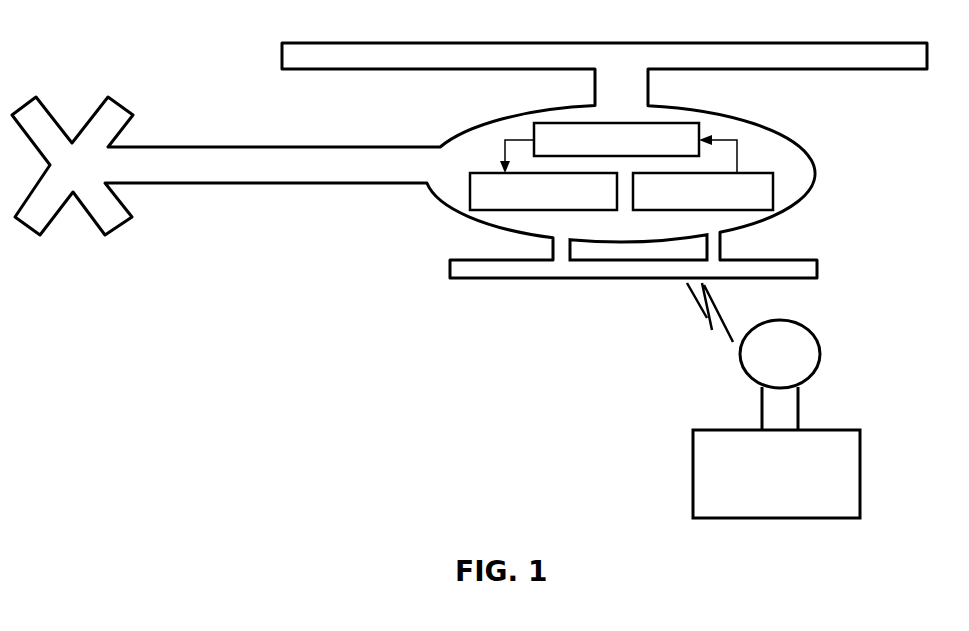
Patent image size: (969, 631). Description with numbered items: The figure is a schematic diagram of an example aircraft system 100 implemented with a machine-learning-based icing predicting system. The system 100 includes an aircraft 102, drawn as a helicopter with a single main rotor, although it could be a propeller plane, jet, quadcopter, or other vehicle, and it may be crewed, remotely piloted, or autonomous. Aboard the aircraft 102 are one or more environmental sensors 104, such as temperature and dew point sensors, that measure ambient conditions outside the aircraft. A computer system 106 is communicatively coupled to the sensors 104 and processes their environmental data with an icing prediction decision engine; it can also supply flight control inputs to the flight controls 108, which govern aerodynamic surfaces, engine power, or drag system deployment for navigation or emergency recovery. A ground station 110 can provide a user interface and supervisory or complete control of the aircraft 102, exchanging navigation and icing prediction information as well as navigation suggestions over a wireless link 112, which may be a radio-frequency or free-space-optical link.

The aircraft system 100 is at (143, 36).
The aircraft 102 is at (803, 153).
The environmental sensors 104 is at (770, 212).
The computer system 106 is at (544, 123).
The flight controls 108 is at (488, 210).
The ground station 110 is at (828, 428).
The wireless link 112 is at (671, 339).